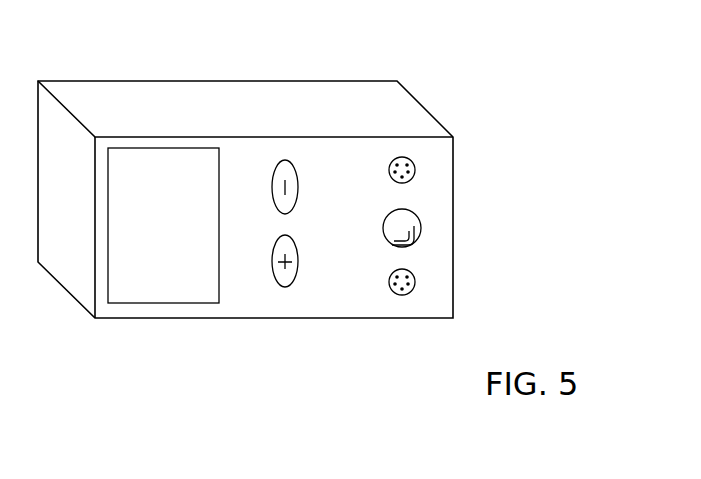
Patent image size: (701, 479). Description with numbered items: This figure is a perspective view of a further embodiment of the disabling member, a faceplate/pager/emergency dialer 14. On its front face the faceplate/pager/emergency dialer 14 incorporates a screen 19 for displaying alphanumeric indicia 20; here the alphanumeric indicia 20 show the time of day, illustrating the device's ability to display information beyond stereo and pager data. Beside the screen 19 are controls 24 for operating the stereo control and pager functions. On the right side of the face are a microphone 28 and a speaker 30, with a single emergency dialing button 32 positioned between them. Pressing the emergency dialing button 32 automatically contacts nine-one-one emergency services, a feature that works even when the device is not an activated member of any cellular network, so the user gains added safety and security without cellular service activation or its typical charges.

The faceplate/pager/emergency dialer 14 is at (513, 172).
The screen 19 is at (190, 303).
The alphanumeric indicia 20 is at (178, 168).
The controls 24 is at (285, 288).
The microphone 28 is at (417, 170).
The speaker 30 is at (402, 295).
The emergency dialing button 32 is at (421, 233).